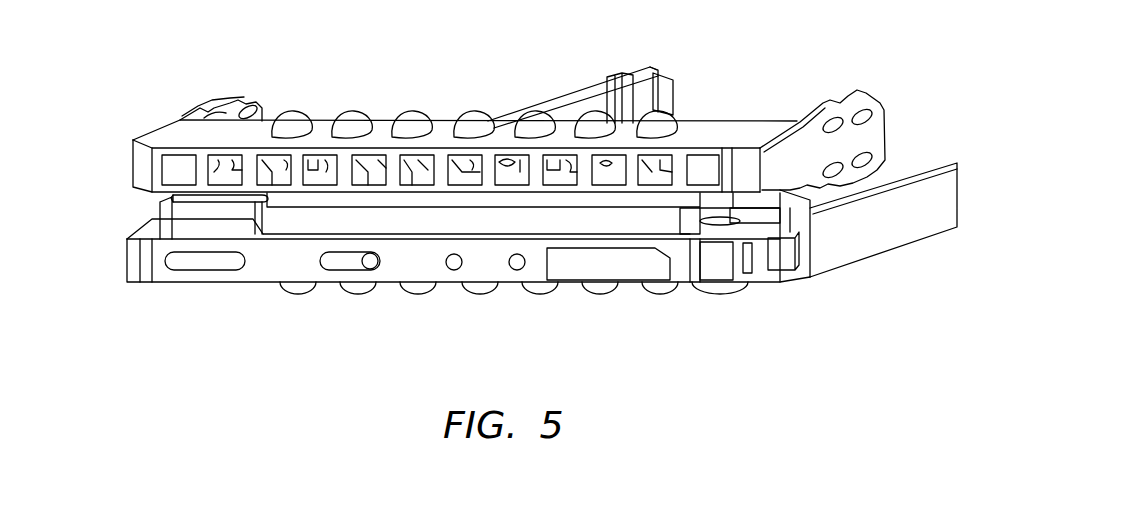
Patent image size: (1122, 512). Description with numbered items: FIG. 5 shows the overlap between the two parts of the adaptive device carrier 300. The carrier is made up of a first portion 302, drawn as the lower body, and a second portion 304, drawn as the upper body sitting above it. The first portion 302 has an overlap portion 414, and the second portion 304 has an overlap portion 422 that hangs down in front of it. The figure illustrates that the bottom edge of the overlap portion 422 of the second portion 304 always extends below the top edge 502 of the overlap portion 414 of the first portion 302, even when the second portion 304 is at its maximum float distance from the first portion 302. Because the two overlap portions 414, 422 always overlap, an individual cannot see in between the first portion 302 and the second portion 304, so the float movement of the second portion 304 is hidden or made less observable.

The adaptive device carrier 300 is at (500, 191).
The first portion 302 is at (127, 260).
The second portion 304 is at (133, 163).
The overlap portion 414 is at (393, 226).
The overlap portion 422 is at (272, 198).
The top edge 502 is at (173, 197).